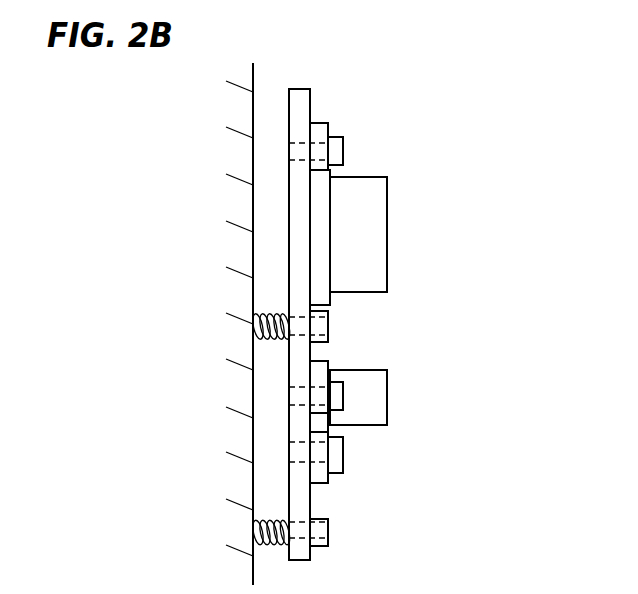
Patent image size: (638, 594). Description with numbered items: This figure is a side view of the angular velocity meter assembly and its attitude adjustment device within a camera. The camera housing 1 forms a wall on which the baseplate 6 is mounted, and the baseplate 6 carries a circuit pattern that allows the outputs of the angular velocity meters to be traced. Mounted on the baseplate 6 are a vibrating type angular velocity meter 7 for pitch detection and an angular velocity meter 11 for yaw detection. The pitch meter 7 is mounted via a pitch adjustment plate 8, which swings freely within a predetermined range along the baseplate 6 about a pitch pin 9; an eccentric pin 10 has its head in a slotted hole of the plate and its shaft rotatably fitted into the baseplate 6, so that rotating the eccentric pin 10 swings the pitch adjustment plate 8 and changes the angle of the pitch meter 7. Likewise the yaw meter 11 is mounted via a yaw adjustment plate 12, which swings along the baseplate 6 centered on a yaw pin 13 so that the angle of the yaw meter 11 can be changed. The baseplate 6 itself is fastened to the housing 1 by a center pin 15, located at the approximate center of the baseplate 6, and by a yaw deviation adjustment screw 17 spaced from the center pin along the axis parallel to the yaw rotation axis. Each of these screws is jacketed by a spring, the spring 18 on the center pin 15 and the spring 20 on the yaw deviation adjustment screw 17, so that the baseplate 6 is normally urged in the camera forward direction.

The camera housing 1 is at (254, 77).
The baseplate 6 is at (300, 89).
The angular velocity meter for pitch detection 7 is at (387, 402).
The pitch adjustment plate 8 is at (319, 483).
The pitch pin 9 is at (345, 397).
The eccentric pin 10 is at (344, 455).
The angular velocity meter for yaw detection 11 is at (387, 234).
The yaw adjustment plate 12 is at (321, 123).
The yaw pin 13 is at (344, 152).
The center pin 15 is at (329, 322).
The yaw deviation adjustment screw 17 is at (329, 532).
The spring 18 is at (276, 340).
The spring 20 is at (277, 546).